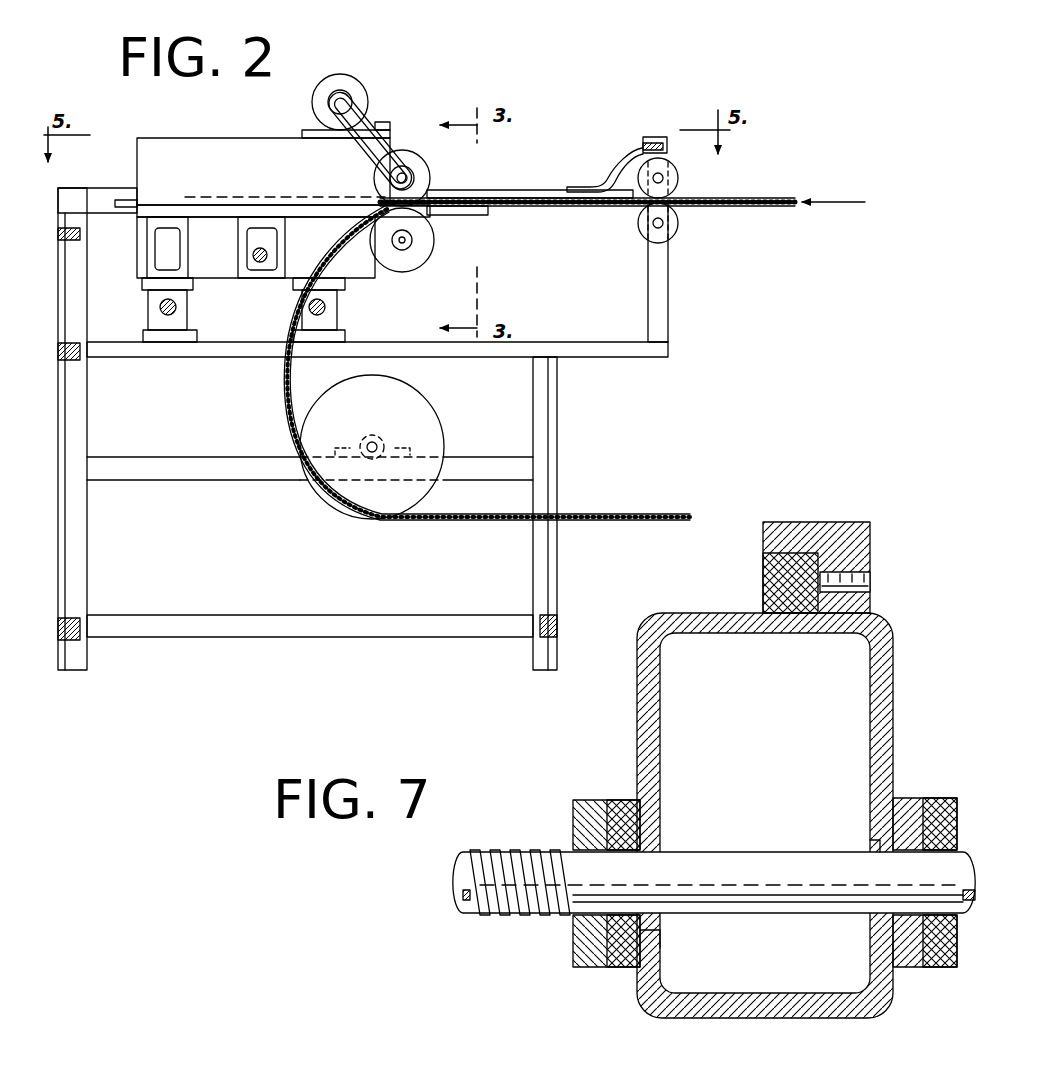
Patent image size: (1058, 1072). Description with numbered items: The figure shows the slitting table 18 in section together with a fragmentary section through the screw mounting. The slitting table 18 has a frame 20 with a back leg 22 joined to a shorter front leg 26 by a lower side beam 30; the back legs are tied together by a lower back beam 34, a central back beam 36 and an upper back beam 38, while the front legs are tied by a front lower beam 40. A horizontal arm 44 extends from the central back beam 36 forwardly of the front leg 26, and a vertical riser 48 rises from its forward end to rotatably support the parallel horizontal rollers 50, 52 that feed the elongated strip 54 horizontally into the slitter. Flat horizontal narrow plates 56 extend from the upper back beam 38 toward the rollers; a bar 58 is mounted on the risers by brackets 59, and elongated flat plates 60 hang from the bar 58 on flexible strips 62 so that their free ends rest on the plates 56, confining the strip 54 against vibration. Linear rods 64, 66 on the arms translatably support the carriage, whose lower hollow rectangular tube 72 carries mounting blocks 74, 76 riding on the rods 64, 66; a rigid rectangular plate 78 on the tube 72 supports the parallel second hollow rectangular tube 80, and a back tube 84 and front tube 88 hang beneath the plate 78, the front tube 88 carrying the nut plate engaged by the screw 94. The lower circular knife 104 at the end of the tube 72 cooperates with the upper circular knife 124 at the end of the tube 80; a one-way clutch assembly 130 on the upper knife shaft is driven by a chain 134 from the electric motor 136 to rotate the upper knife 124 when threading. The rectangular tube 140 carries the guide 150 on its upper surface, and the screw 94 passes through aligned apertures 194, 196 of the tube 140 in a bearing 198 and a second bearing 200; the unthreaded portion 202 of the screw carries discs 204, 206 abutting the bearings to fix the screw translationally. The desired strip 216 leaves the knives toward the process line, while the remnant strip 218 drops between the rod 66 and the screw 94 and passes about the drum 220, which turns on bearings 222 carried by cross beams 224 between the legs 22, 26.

In FIG. 2, the slitting table 18 is at (132, 150).
In FIG. 2, the frame 20 is at (560, 415).
In FIG. 2, the back leg 22 is at (85, 555).
In FIG. 2, the front leg 26 is at (548, 444).
In FIG. 2, the lower side beam 30 is at (310, 627).
In FIG. 2, the lower back beam 34 is at (70, 636).
In FIG. 2, the central back beam 36 is at (72, 360).
In FIG. 2, the upper back beam 38 is at (72, 232).
In FIG. 2, the front lower beam 40 is at (560, 632).
In FIG. 2, the horizontal arm 44 is at (583, 350).
In FIG. 2, the vertical riser 48 is at (660, 278).
In FIG. 2, the upper roller 50 is at (680, 180).
In FIG. 2, the lower roller 52 is at (637, 225).
In FIG. 2, the elongated strip 54 is at (718, 198).
In FIG. 2, the flat horizontal narrow plate 56 is at (458, 215).
In FIG. 2, the bar 58 is at (620, 162).
In FIG. 2, the bracket 59 is at (650, 137).
In FIG. 2, the elongated flat plate 60 is at (470, 192).
In FIG. 2, the flexible strip 62 is at (630, 148).
In FIG. 2, the linear rod 64 is at (160, 308).
In FIG. 2, the linear rod 66 is at (326, 308).
In FIG. 2, the lower hollow rectangular tube 72 is at (228, 247).
In FIG. 2, the mounting block 74 is at (192, 288).
In FIG. 2, the mounting block 76 is at (338, 286).
In FIG. 2, the rigid rectangular plate 78 is at (205, 212).
In FIG. 2, the second hollow rectangular tube 80 is at (272, 168).
In FIG. 2, the back tube 84 is at (150, 252).
In FIG. 2, the front tube 88 is at (272, 272).
In FIG. 2, the screw 94 is at (262, 253).
In FIG. 7, the screw 94 is at (710, 845).
In FIG. 2, the lower circular knife 104 is at (410, 276).
In FIG. 2, the upper circular knife 124 is at (405, 148).
In FIG. 2, the assembly 130 is at (410, 178).
In FIG. 2, the chain 134 is at (372, 120).
In FIG. 2, the electric motor 136 is at (318, 99).
In FIG. 7, the rectangular tube 140 is at (648, 733).
In FIG. 7, the guide 150 is at (814, 537).
In FIG. 7, the aperture 194 is at (650, 950).
In FIG. 7, the aperture 196 is at (872, 843).
In FIG. 7, the bearing 198 is at (628, 960).
In FIG. 7, the second bearing 200 is at (878, 922).
In FIG. 7, the unthreaded shaft portion 202 is at (805, 878).
In FIG. 7, the disc 204 is at (580, 945).
In FIG. 7, the disc 206 is at (938, 795).
In FIG. 2, the desired strip 216 is at (122, 200).
In FIG. 2, the remnant strip 218 is at (280, 400).
In FIG. 2, the drum 220 is at (395, 497).
In FIG. 2, the bearing 222 is at (382, 436).
In FIG. 2, the cross beam 224 is at (273, 468).